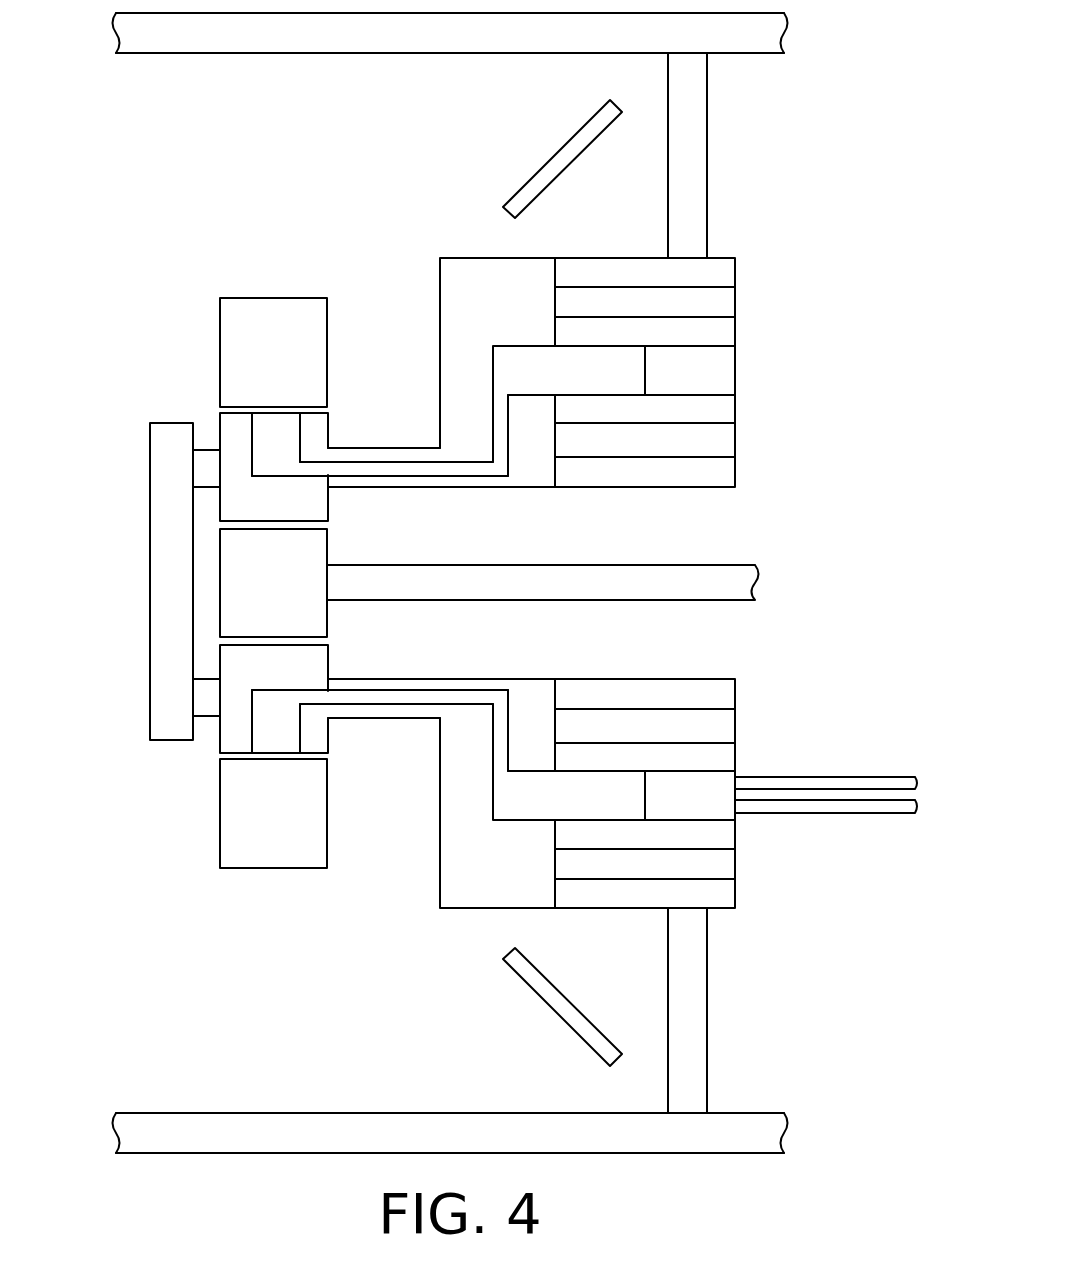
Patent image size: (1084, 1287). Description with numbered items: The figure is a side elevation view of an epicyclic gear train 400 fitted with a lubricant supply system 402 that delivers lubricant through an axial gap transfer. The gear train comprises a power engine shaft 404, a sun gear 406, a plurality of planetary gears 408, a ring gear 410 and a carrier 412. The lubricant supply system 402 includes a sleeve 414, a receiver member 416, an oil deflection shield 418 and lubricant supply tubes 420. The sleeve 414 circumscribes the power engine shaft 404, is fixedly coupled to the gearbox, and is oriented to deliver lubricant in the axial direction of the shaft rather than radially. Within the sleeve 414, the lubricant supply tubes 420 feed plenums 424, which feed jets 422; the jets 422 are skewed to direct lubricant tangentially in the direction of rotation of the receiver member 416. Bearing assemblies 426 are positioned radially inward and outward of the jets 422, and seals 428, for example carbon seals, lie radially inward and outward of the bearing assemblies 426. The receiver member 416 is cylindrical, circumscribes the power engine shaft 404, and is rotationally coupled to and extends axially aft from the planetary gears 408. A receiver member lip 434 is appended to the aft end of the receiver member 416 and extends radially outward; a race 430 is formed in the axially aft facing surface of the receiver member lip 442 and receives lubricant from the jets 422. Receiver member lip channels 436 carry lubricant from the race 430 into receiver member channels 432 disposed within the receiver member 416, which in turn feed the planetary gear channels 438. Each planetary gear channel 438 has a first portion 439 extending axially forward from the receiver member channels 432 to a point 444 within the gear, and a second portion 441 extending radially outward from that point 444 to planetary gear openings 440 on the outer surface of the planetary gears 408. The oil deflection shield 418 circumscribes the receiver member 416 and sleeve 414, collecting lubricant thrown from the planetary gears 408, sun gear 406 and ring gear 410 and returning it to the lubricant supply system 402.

The epicyclic gear train 400 is at (203, 232).
The lubricant supply system 402 is at (467, 940).
The power engine shaft 404 is at (690, 577).
The sun gear 406 is at (257, 597).
The planetary gears 408 is at (257, 511).
The ring gear 410 is at (257, 371).
The carrier 412 is at (158, 423).
The sleeve 414 is at (738, 370).
The receiver member 416 is at (437, 489).
The oil deflection shield 418 is at (553, 158).
The lubricant supply tubes 420 is at (835, 778).
The jets 422 is at (576, 382).
The plenums 424 is at (672, 382).
The bearing assemblies 426 is at (680, 305).
The seals 428 is at (712, 696).
The race 430 is at (503, 382).
The receiver member channels 432 is at (452, 467).
The receiver member lip 434 is at (468, 258).
The receiver member lip channels 436 is at (498, 442).
The planetary gear channels 438 is at (308, 467).
The first portion 439 is at (397, 463).
The planetary gear openings 440 is at (275, 412).
The second portion 441 is at (265, 437).
The receiver member lip 442 is at (557, 272).
The point 444 is at (252, 475).